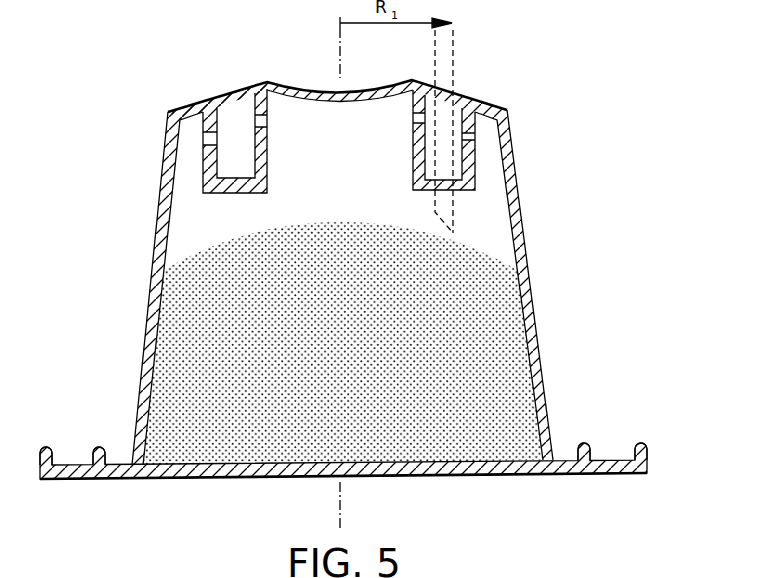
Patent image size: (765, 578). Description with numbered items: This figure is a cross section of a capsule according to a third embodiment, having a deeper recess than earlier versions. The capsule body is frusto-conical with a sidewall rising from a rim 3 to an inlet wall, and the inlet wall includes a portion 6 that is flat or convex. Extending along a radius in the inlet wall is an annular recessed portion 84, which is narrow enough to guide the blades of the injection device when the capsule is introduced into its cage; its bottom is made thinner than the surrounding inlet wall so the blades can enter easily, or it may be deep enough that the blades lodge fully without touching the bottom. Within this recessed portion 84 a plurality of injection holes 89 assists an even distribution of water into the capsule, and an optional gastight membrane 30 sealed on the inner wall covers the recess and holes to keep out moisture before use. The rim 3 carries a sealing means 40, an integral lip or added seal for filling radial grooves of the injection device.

The rim 3 is at (618, 467).
The portion 6 is at (263, 72).
The gastight membrane 30 is at (462, 96).
The sealing means 40 is at (587, 443).
The annular recessed portion 84 is at (228, 154).
The injection holes 89 is at (470, 137).